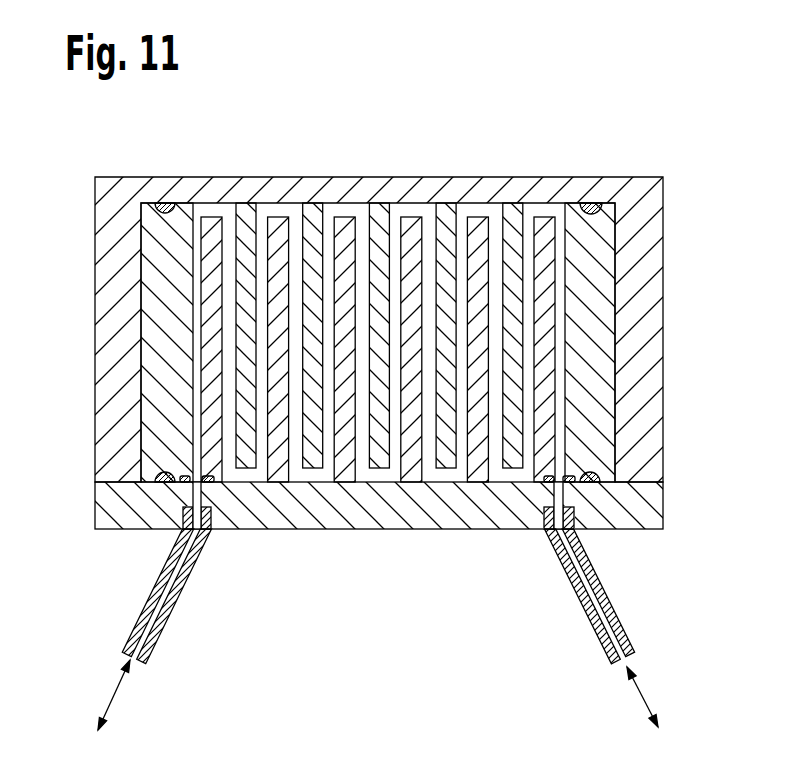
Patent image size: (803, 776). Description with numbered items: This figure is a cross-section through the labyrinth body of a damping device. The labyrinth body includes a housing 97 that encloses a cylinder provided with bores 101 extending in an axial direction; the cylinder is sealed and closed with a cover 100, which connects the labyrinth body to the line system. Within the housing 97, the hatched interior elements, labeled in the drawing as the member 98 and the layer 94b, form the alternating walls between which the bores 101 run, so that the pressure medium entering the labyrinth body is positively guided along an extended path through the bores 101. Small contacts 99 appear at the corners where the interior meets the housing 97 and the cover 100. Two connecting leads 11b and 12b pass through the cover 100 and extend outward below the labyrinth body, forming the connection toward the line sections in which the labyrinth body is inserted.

The housing 97 is at (118, 353).
The electrode 98 is at (172, 418).
The electrode layer 94b is at (213, 237).
The bores 101 is at (397, 232).
The solder contact 99 is at (589, 205).
The cover 100 is at (393, 510).
The connecting lead 11b is at (197, 523).
The connecting lead 12b is at (545, 532).